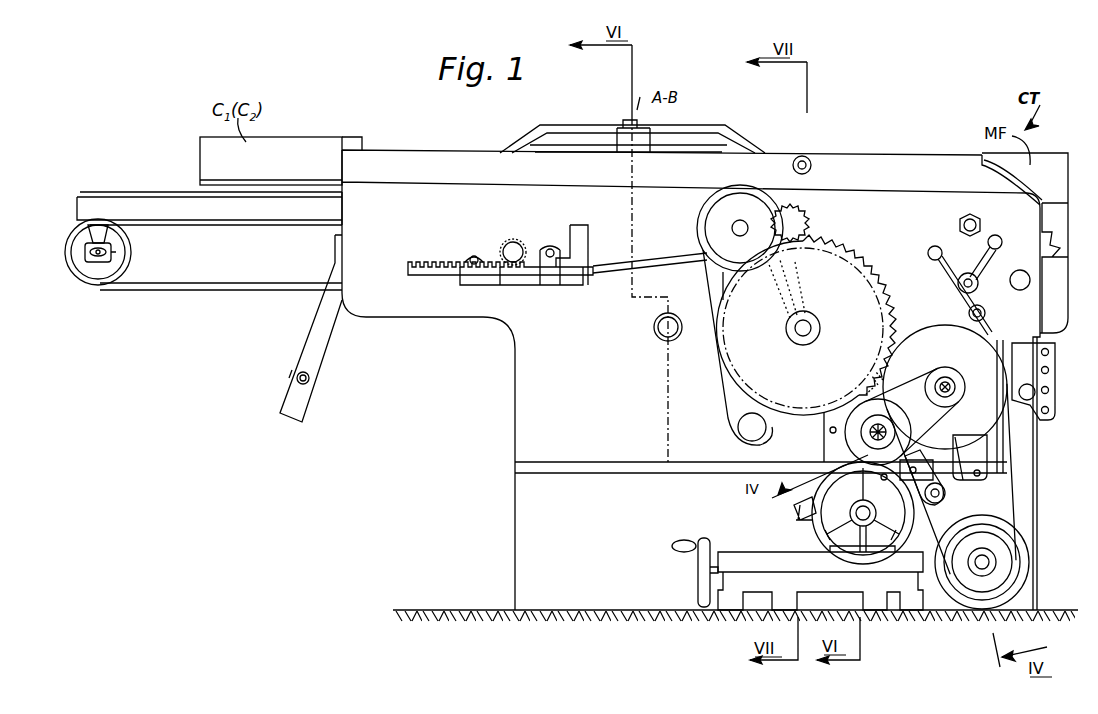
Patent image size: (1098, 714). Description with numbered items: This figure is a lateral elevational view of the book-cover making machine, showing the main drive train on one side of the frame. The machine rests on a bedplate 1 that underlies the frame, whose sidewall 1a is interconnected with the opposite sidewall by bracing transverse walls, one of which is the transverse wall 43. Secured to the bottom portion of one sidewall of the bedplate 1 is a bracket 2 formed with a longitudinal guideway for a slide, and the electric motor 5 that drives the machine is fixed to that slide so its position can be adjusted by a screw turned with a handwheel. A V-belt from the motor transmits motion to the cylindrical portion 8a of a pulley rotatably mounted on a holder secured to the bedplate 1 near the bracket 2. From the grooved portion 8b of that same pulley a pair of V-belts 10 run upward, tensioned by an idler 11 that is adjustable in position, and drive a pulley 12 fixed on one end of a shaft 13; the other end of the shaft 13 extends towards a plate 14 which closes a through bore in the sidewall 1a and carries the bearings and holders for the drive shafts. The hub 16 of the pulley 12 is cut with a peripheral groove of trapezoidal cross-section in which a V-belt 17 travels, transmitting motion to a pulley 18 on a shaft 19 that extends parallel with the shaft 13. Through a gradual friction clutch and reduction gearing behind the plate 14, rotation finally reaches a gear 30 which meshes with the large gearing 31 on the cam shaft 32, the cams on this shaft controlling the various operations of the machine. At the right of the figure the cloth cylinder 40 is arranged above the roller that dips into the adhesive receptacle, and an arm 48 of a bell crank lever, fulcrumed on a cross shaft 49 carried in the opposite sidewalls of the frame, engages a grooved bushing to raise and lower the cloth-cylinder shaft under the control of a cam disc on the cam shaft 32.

The bedplate 1 is at (530, 524).
The sidewall 1a is at (535, 410).
The bracket 2 is at (827, 577).
The electric motor 5 is at (820, 514).
The cylindrical portion of pulley 8a is at (998, 575).
The grooved portion of pulley 8b is at (1005, 543).
The V-belts 10 is at (1015, 497).
The idler 11 is at (948, 498).
The pulley 12 is at (927, 337).
The shaft 13 is at (946, 378).
The plate 14 is at (977, 453).
The hub 16 is at (958, 387).
The V-belt 17 is at (964, 450).
The pulley 18 is at (860, 415).
The shaft 19 is at (873, 433).
The gear 30 is at (868, 384).
The large gearing 31 is at (850, 253).
The shaft 32 is at (812, 330).
The cloth cylinder 40 is at (1037, 178).
The transverse wall 43 is at (702, 560).
The arm 48 is at (945, 266).
The cross shaft 49 is at (995, 337).